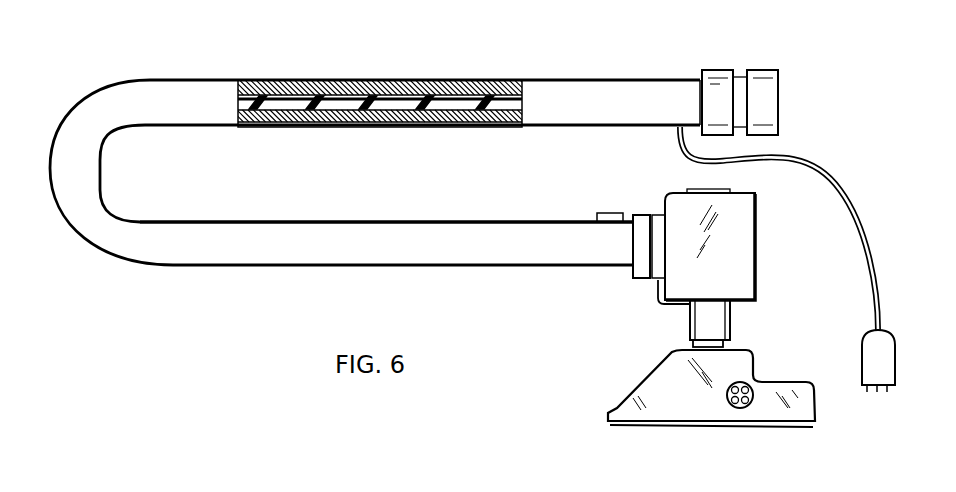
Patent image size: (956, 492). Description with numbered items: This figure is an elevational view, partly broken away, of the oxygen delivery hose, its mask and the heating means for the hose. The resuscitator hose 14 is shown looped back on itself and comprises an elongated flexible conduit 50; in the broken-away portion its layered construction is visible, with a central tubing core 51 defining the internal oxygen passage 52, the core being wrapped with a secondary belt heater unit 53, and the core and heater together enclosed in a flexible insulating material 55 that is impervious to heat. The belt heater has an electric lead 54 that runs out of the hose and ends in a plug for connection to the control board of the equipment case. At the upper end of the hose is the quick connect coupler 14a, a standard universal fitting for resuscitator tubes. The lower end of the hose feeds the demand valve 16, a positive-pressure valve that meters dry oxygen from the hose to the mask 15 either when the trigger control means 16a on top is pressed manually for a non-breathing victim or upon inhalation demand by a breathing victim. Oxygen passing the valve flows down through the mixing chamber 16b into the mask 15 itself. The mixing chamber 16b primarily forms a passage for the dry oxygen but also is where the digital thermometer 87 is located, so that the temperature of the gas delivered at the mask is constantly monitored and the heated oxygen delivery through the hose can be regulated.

The resuscitator hose 14 is at (227, 268).
The quick connect coupler 14a is at (738, 72).
The mask 15 is at (820, 424).
The demand valve 16 is at (740, 242).
The trigger control means 16a is at (713, 188).
The mixing chamber 16b is at (712, 323).
The elongated flexible conduit 50 is at (277, 220).
The central tubing core 51 is at (408, 90).
The internal oxygen passage 52 is at (338, 97).
The secondary belt heater unit 53 is at (327, 84).
The electric lead 54 is at (818, 163).
The flexible insulating material 55 is at (273, 82).
The digital thermometer 87 is at (658, 306).